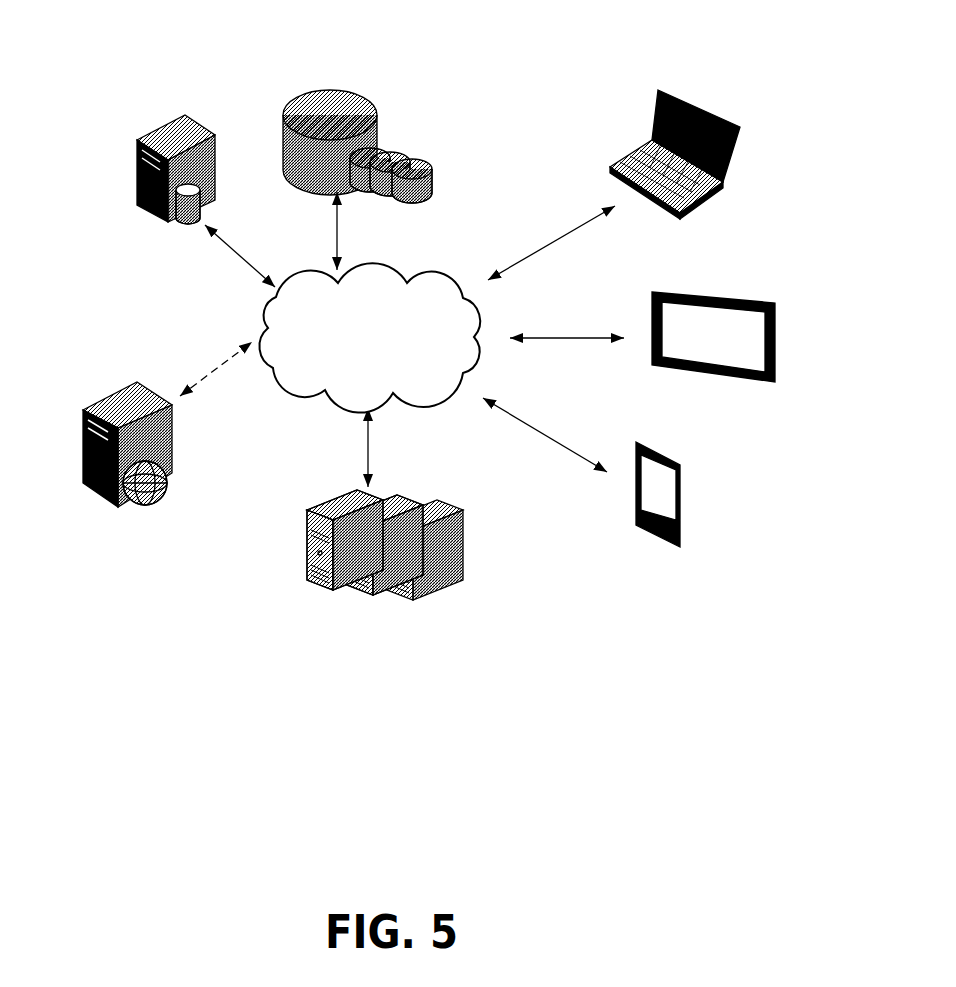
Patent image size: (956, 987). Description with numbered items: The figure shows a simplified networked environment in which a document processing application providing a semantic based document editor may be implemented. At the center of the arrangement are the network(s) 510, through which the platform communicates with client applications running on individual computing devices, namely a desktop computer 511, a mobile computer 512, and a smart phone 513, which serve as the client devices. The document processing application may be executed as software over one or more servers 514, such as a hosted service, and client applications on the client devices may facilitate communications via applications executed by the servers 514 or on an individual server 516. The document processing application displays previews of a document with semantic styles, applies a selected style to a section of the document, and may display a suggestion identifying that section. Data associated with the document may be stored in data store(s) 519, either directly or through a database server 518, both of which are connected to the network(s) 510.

The network(s) 510 is at (378, 260).
The desktop computer 511 is at (712, 90).
The mobile computer 512 is at (750, 272).
The smart phone 513 is at (687, 458).
The servers 514 is at (333, 488).
The individual server 516 is at (105, 388).
The database server 518 is at (177, 232).
The data store(s) 519 is at (345, 68).